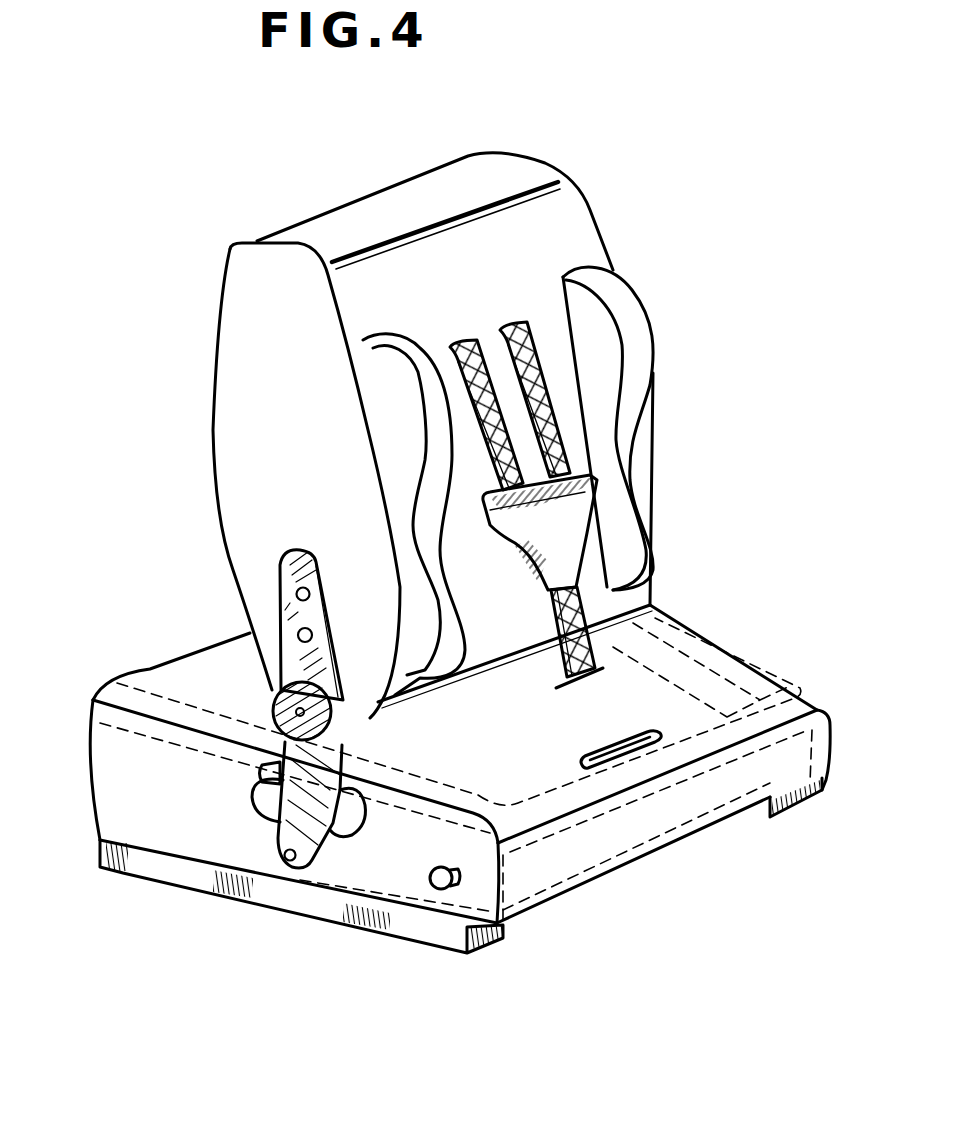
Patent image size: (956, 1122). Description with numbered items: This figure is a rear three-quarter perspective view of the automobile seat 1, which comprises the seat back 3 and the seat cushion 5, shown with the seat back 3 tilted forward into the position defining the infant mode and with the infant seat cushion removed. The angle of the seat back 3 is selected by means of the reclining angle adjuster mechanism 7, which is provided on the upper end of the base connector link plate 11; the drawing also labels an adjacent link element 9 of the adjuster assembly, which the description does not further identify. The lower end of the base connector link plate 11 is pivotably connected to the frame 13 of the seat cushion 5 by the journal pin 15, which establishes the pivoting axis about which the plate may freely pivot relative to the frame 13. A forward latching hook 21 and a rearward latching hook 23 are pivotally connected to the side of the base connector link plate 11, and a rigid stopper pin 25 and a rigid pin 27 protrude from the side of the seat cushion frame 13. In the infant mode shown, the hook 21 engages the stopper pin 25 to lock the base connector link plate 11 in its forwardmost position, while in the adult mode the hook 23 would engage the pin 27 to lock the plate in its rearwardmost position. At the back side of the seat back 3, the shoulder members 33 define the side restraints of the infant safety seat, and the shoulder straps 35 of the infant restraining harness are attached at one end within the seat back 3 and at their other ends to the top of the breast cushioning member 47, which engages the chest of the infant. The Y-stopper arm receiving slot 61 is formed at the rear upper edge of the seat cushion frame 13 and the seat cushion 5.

The automobile seat 1 is at (686, 240).
The seat back 3 is at (585, 236).
The seat cushion 5 is at (157, 693).
The reclining angle adjuster mechanism 7 is at (272, 690).
The lever arm 9 is at (290, 565).
The base connector link plate 11 is at (311, 870).
The frame 13 is at (710, 647).
The journal pin 15 is at (281, 868).
The hook 21 is at (258, 800).
The hook 23 is at (353, 830).
The stopper pin 25 is at (262, 776).
The rigid pin 27 is at (440, 891).
The shoulder members 33 is at (388, 408).
The shoulder straps 35 is at (497, 402).
The breast cushioning member 47 is at (570, 530).
The Y-stopper arm receiving slot 61 is at (632, 742).